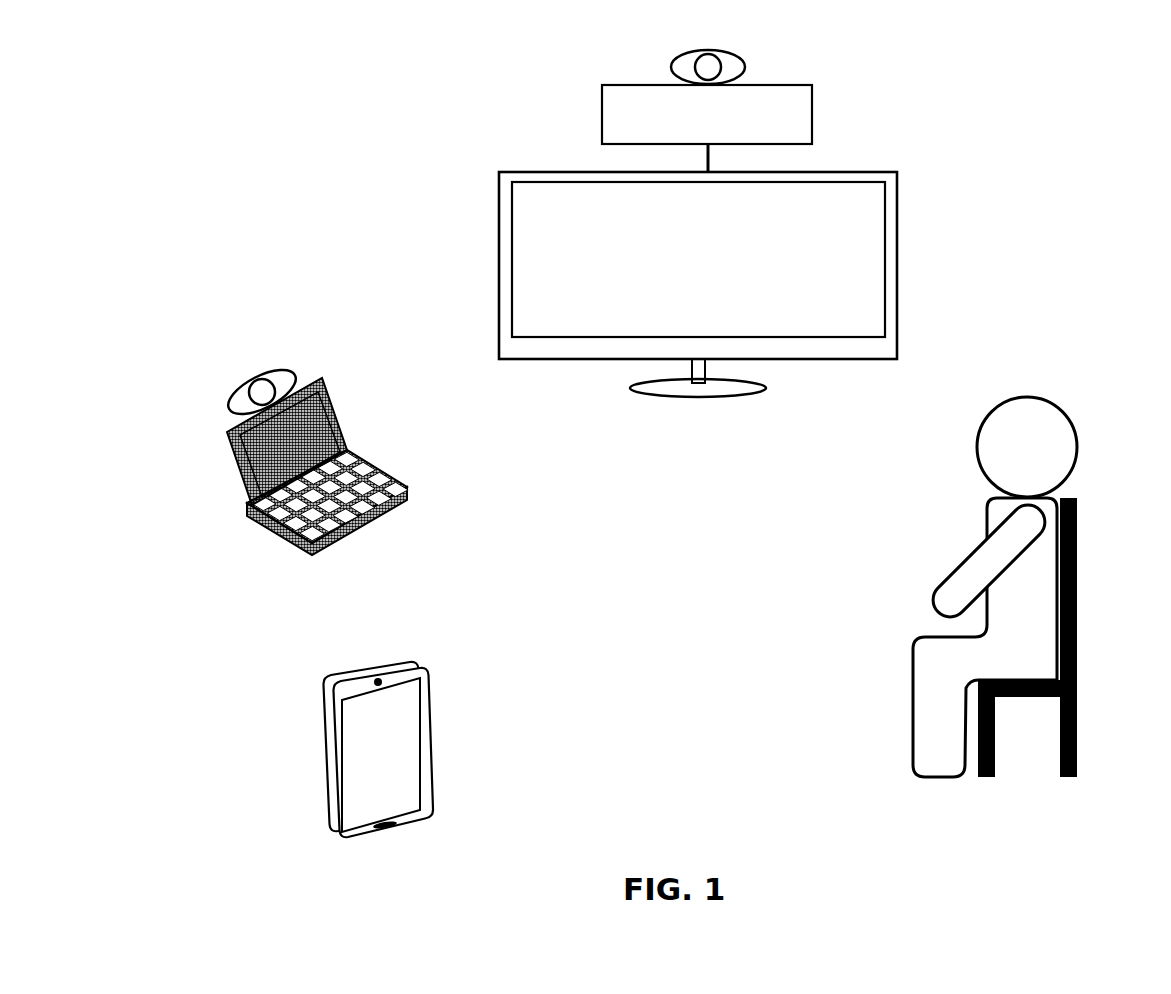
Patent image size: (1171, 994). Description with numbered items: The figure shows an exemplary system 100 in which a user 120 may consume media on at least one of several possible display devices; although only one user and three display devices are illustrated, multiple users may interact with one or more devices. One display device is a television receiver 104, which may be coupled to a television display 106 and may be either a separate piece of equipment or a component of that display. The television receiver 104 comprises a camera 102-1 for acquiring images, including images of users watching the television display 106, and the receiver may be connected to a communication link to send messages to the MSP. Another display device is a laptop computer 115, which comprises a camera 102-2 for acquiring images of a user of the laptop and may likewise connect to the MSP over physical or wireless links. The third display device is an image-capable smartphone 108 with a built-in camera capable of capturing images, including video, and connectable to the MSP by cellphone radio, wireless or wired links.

The system 100 is at (150, 162).
The camera 102-1 is at (672, 63).
The camera 102-2 is at (250, 381).
The television receiver 104 is at (602, 115).
The television display 106 is at (499, 253).
The image-capable smartphone 108 is at (322, 730).
The laptop computer 115 is at (247, 503).
The user 120 is at (1078, 447).